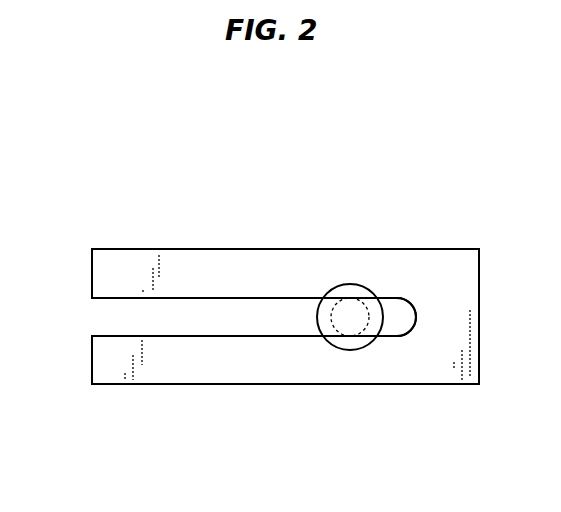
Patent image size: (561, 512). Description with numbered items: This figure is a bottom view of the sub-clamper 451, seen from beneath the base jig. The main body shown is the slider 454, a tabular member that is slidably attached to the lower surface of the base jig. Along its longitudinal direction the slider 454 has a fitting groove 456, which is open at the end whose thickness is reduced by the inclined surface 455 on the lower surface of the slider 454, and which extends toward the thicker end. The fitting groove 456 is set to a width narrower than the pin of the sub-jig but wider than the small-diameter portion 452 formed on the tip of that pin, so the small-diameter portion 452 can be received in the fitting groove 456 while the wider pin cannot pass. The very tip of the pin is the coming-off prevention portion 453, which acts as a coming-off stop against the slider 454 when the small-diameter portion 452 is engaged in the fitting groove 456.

The holding member 451 is at (136, 163).
The small-diameter portion 452 is at (369, 350).
The coming-off prevention portion 453 is at (343, 284).
The slider 454 is at (237, 249).
The inclined surface 455 is at (277, 363).
The fitting groove 456 is at (157, 333).